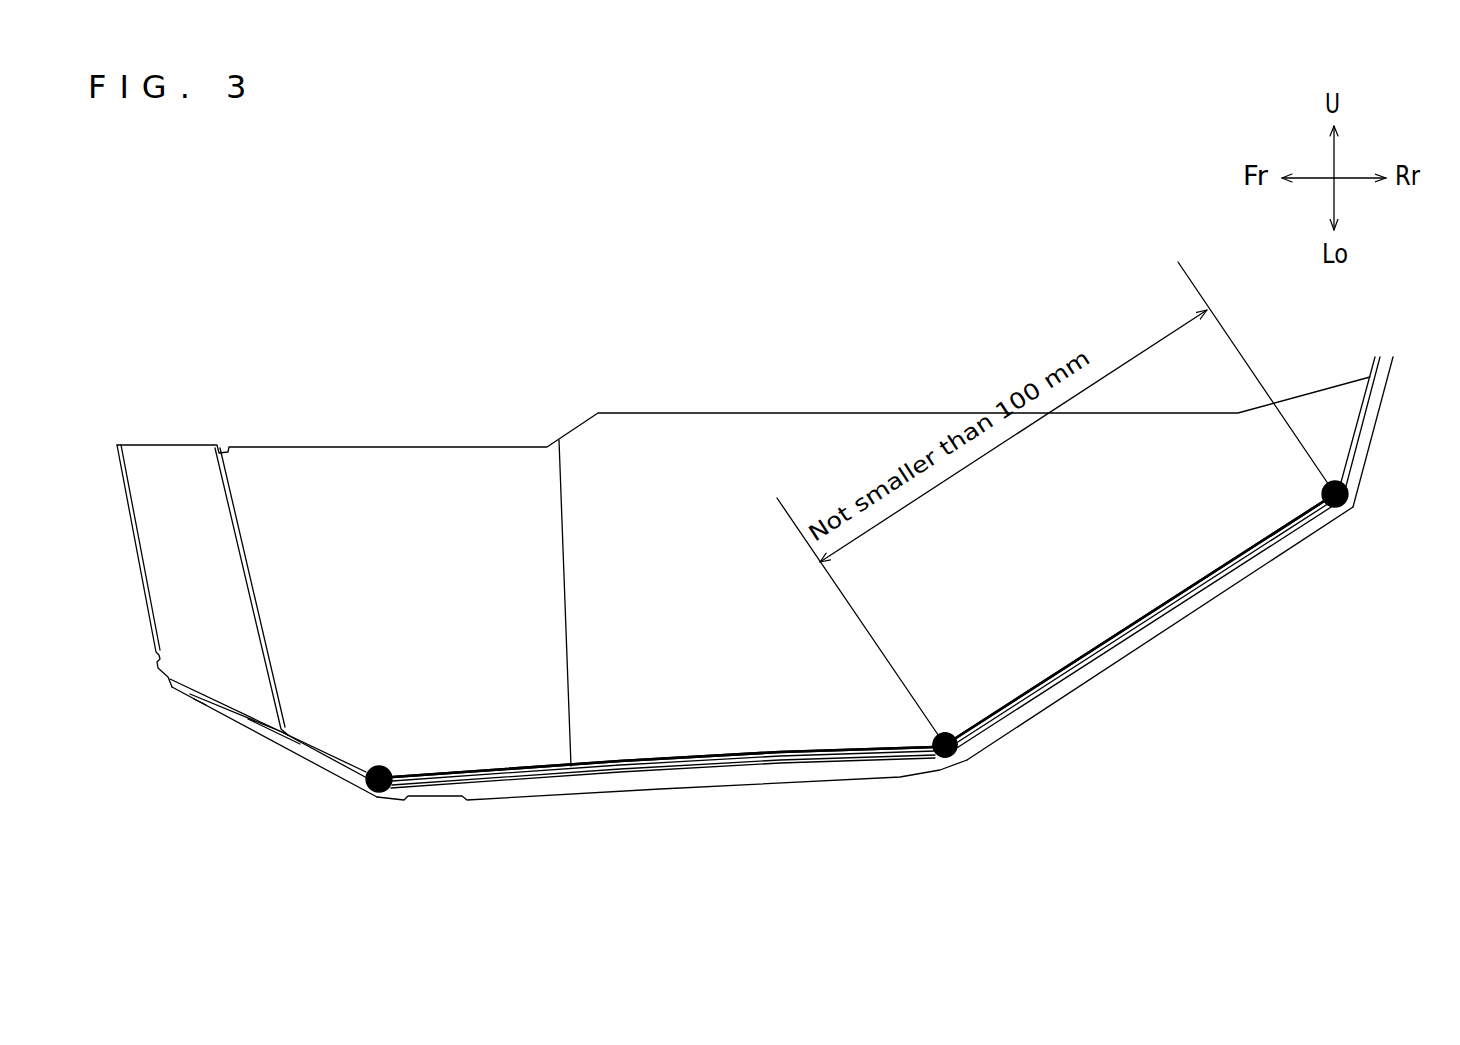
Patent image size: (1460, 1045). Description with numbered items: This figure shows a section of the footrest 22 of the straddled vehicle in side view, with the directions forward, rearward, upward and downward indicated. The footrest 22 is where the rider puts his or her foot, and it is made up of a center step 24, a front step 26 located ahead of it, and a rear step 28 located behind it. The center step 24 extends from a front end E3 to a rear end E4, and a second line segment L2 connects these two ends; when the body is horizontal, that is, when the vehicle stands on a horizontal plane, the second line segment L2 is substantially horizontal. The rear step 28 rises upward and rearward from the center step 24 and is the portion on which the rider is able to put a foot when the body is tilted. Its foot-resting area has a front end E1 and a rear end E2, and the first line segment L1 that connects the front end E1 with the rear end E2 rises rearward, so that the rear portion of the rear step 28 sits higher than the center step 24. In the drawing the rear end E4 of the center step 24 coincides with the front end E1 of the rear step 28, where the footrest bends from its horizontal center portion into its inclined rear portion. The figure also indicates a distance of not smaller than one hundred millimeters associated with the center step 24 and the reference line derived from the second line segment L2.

The footrest 22 is at (623, 397).
The center step 24 is at (723, 775).
The front step 26 is at (336, 777).
The rear step 28 is at (1163, 623).
The first line segment L1 is at (1120, 632).
The second line segment L2 is at (648, 760).
The front end of the rear step E1 is at (943, 760).
The rear end of the rear step E2 is at (1350, 494).
The front end of the center step E3 is at (376, 800).
The rear end of the center step E4 is at (949, 846).